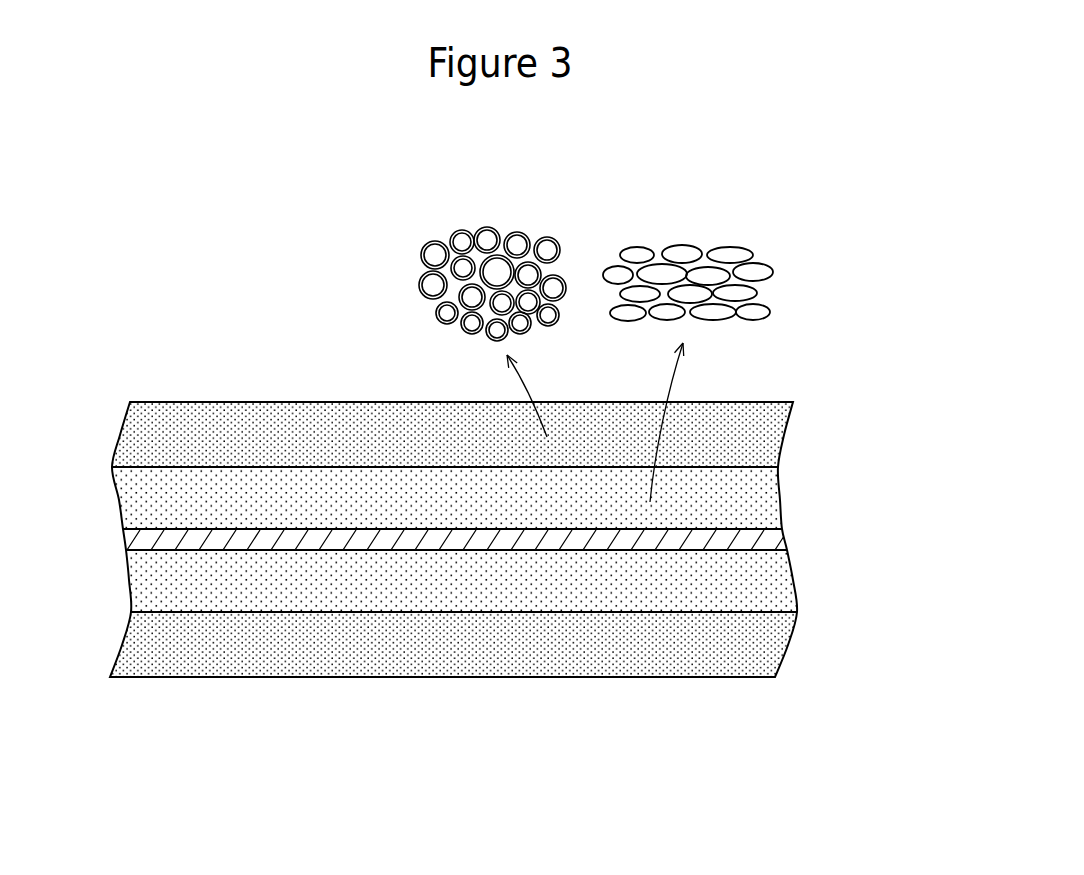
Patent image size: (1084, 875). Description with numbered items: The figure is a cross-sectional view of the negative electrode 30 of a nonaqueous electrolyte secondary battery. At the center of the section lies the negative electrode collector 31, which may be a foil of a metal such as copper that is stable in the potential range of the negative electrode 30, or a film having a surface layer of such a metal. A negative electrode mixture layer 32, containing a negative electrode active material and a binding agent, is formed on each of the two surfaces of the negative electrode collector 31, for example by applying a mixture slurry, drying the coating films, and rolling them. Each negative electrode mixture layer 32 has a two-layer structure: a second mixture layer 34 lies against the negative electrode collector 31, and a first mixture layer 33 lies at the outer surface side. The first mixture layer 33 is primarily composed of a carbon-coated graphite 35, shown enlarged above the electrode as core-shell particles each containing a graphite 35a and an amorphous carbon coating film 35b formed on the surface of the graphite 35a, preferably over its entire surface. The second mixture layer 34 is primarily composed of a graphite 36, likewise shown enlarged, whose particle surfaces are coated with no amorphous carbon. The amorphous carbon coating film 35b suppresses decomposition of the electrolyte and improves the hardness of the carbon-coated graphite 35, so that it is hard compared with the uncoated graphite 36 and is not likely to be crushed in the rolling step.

The negative electrode 30 is at (782, 198).
The negative electrode collector 31 is at (443, 540).
The negative electrode mixture layer 32 is at (310, 325).
The first mixture layer 33 is at (236, 408).
The second mixture layer 34 is at (295, 478).
The carbon-coated graphite 35 is at (463, 228).
The graphite 35a is at (515, 242).
The amorphous carbon coating film 35b is at (533, 232).
The graphite 36 is at (643, 247).